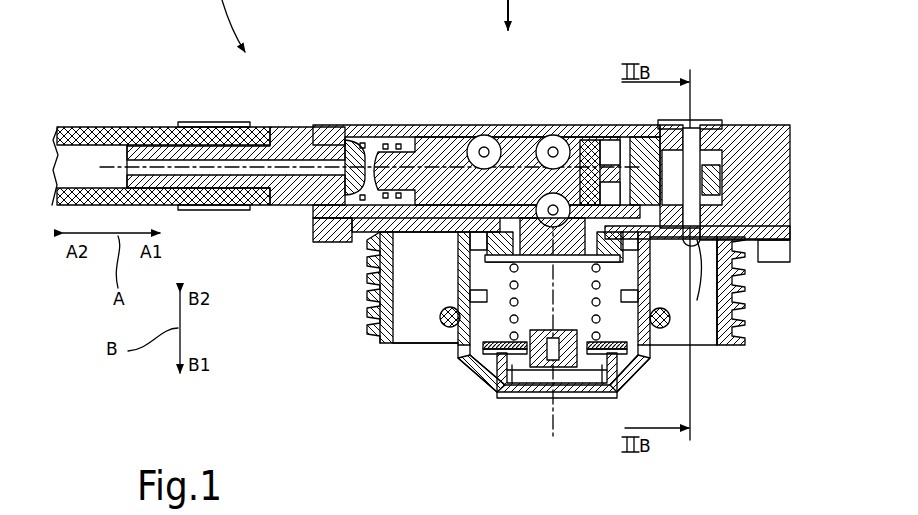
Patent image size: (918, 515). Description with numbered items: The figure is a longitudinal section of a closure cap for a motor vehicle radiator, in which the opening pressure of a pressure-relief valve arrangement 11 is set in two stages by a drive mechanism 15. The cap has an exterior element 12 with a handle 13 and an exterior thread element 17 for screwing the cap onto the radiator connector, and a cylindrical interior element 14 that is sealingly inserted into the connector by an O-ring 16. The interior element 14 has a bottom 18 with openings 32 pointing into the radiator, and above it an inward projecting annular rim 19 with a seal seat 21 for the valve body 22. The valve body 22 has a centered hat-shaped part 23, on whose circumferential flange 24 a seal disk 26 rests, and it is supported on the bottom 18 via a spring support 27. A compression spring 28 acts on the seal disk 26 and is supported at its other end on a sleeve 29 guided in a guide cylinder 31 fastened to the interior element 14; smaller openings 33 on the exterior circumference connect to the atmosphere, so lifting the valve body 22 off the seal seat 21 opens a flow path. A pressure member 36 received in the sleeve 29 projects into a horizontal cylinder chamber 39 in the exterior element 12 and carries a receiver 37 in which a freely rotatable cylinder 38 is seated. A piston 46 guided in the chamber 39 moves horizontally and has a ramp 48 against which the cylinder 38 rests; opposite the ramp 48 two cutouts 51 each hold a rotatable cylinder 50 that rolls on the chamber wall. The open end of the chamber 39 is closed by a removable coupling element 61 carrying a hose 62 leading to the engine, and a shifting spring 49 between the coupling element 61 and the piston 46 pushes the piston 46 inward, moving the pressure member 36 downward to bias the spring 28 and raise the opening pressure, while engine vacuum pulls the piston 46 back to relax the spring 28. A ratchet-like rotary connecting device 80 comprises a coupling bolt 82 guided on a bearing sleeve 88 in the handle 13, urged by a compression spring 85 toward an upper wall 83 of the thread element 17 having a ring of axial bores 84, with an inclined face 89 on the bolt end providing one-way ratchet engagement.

The pressure-relief valve arrangement 11 is at (446, 396).
The exterior element 12 is at (318, 228).
The handle 13 is at (766, 127).
The interior element 14 is at (375, 347).
The drive mechanism 15 is at (412, 126).
The O-ring 16 is at (424, 290).
The exterior thread element 17 is at (364, 313).
The bottom 18 is at (512, 381).
The annular rim 19 is at (630, 378).
The seal seat 21 is at (622, 372).
The valve body 22 is at (665, 317).
The hat-shaped part 23 is at (545, 376).
The circumferential flange 24 is at (573, 395).
The seal disk 26 is at (652, 360).
The spring support 27 is at (520, 386).
The compression spring 28 is at (668, 282).
The sleeve 29 is at (538, 268).
The guide cylinder 31 is at (376, 262).
The openings 32 is at (497, 380).
The openings 33 is at (640, 370).
The pressure member 36 is at (612, 128).
The cylinder receiver 37 is at (586, 128).
The cylinder 38 is at (535, 127).
The cylinder chamber 39 is at (355, 127).
The piston 46 is at (447, 134).
The ramp 48 is at (523, 127).
The shifting spring 49 is at (388, 127).
The cylinder 50 is at (551, 127).
The cutouts 51 is at (475, 127).
The coupling element 61 is at (282, 128).
The hose 62 is at (118, 128).
The rotary connecting device 80 is at (706, 121).
The coupling bolt 82 is at (700, 165).
The upper wall 83 is at (785, 243).
The axial bores 84 is at (783, 232).
The compression spring 85 is at (650, 128).
The bearing sleeve 88 is at (720, 210).
The inclined face 89 is at (700, 262).